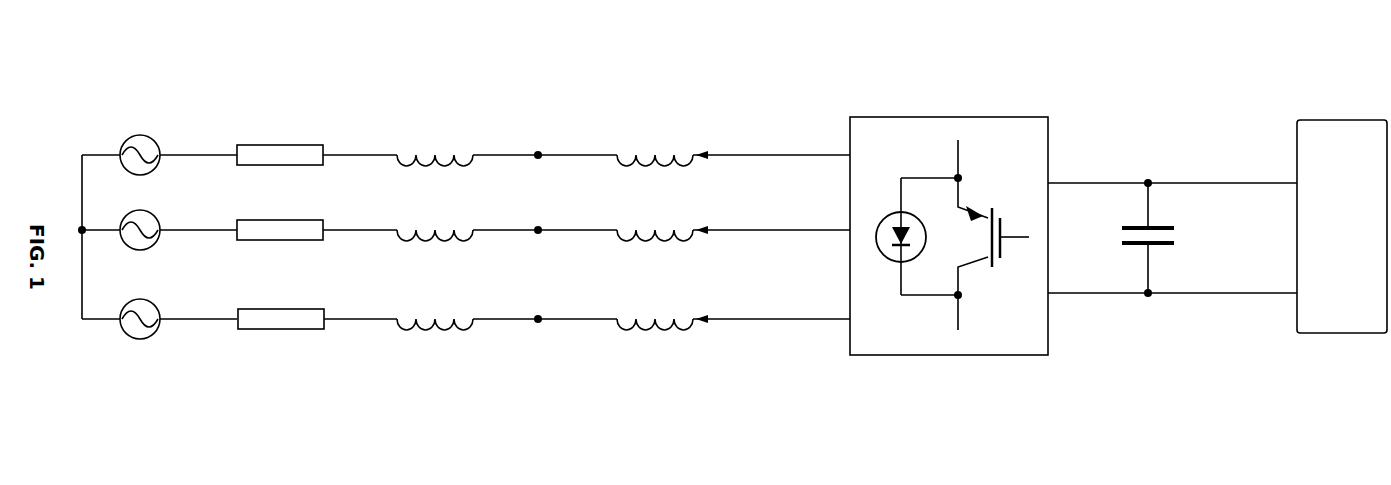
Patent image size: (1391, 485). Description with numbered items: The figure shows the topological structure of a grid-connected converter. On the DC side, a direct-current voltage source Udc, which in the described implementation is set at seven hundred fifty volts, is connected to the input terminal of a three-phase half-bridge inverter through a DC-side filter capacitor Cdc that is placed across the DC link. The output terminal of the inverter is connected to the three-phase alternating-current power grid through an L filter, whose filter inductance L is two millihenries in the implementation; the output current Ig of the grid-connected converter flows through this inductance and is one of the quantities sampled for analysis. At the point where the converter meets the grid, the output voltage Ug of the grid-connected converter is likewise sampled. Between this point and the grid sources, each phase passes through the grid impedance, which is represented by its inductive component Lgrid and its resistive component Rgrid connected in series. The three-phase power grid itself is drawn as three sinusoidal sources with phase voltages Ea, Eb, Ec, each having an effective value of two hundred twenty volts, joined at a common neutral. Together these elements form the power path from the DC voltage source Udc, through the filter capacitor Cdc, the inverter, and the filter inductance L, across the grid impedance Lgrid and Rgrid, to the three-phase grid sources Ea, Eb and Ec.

The phase voltage of phase a Ea is at (140, 329).
The phase voltage of phase b Eb is at (140, 240).
The phase voltage of phase c Ec is at (140, 165).
The resistive component of the grid impedance Rgrid is at (280, 255).
The inductive component of the grid impedance Lgrid is at (435, 260).
The output voltage of the grid-connected converter Ug is at (545, 256).
The filter inductance L is at (655, 260).
The output current of the grid-connected converter Ig is at (771, 251).
The DC-side filter capacitor Cdc is at (1126, 238).
The DC voltage source Udc is at (1315, 226).